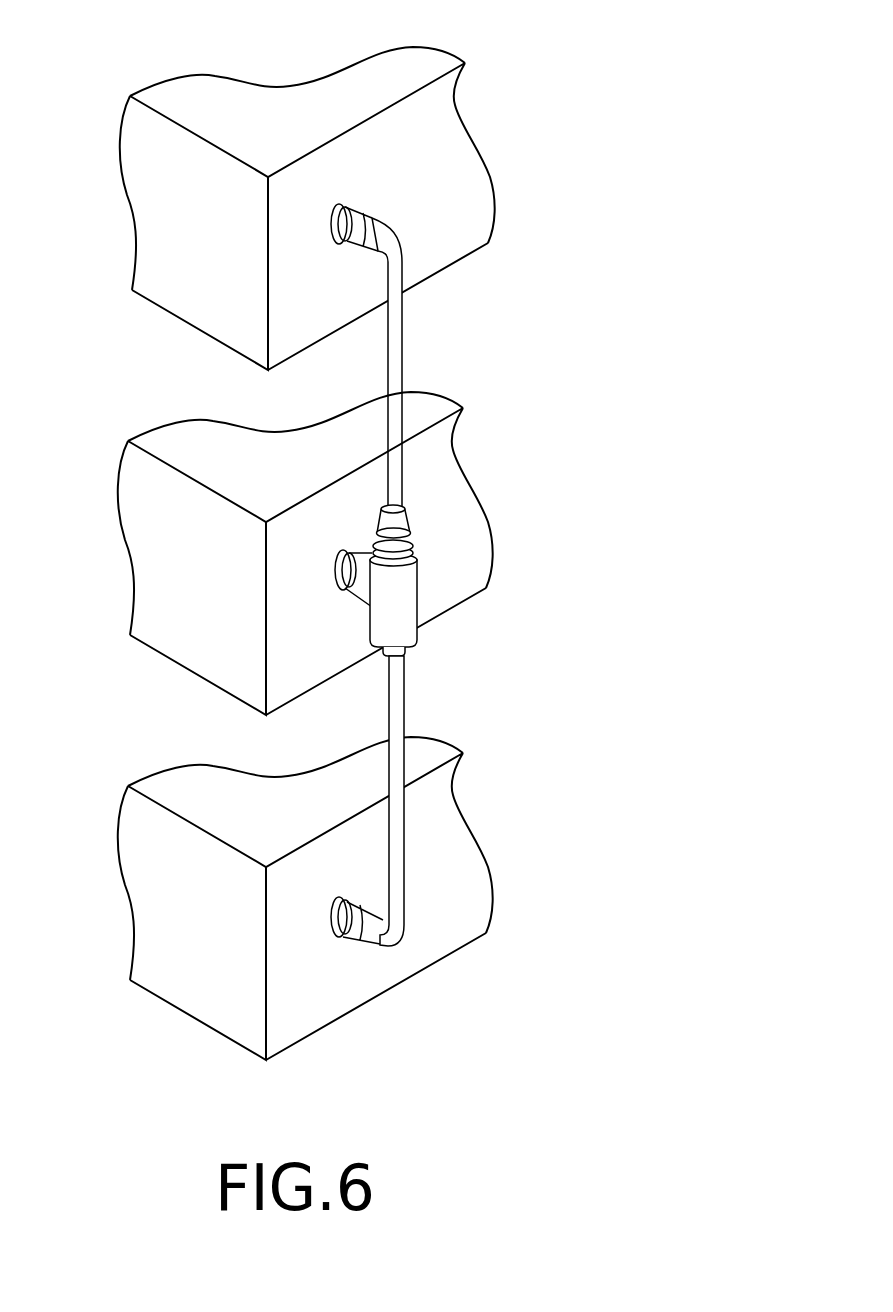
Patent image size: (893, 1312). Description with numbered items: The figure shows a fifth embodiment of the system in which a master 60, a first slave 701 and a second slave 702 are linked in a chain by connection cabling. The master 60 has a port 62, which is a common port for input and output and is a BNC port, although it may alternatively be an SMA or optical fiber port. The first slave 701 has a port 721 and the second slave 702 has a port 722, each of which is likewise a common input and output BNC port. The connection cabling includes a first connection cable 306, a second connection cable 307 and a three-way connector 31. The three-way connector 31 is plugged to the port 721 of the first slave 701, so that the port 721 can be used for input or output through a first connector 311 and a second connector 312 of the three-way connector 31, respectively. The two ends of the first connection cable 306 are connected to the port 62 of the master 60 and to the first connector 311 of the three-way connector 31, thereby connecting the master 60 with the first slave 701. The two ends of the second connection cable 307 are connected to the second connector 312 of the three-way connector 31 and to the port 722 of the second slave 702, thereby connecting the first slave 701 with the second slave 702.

The master 60 is at (492, 181).
The port 62 is at (352, 203).
The first connection cable 306 is at (405, 362).
The second connection cable 307 is at (405, 845).
The first slave 701 is at (160, 555).
The second slave 702 is at (435, 922).
The port 721 is at (398, 507).
The port 722 is at (340, 897).
The three-way connector 31 is at (418, 607).
The first connector 311 is at (413, 560).
The second connector 312 is at (405, 652).